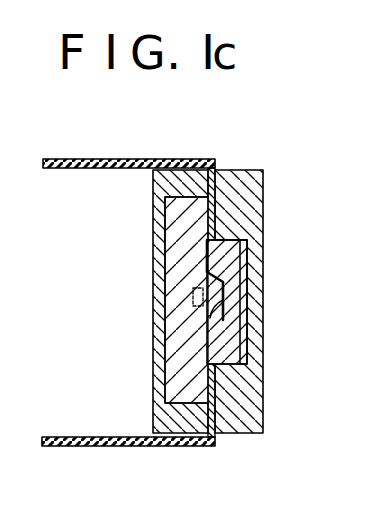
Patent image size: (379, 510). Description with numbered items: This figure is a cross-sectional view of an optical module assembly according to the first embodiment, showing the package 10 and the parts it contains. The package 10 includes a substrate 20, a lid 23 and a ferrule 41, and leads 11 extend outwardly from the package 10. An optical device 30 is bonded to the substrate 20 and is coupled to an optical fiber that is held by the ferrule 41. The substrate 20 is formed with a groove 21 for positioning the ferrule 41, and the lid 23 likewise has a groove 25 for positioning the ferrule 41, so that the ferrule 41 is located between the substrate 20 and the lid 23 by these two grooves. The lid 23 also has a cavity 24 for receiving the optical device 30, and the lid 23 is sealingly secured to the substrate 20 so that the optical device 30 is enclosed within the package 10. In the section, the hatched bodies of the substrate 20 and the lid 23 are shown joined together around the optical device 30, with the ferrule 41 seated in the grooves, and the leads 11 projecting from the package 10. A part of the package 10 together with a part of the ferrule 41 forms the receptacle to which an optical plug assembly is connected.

The package 10 is at (233, 170).
The leads 11 is at (130, 158).
The substrate 20 is at (170, 292).
The groove 21 is at (195, 308).
The lid 23 is at (250, 247).
The cavity 24 is at (243, 278).
The groove 25 is at (226, 290).
The optical device 30 is at (232, 310).
The ferrule 41 is at (246, 360).